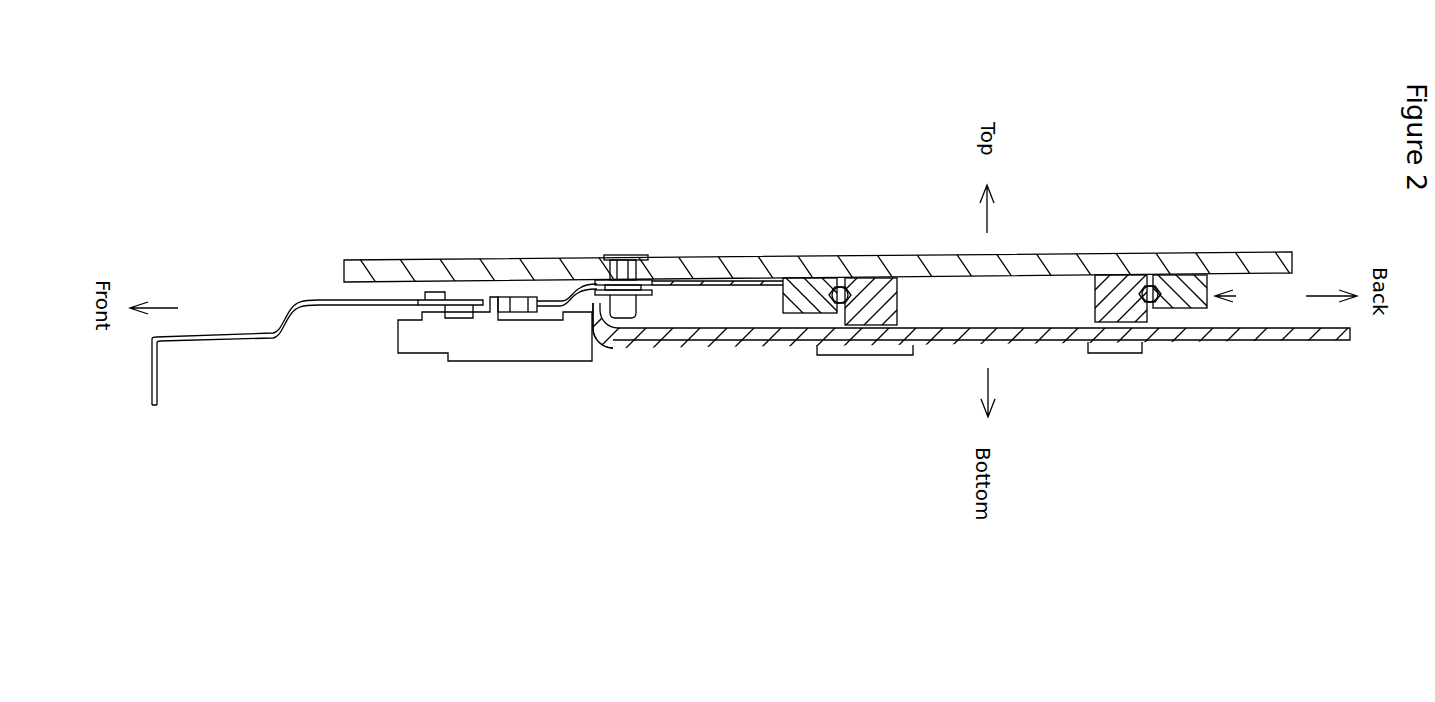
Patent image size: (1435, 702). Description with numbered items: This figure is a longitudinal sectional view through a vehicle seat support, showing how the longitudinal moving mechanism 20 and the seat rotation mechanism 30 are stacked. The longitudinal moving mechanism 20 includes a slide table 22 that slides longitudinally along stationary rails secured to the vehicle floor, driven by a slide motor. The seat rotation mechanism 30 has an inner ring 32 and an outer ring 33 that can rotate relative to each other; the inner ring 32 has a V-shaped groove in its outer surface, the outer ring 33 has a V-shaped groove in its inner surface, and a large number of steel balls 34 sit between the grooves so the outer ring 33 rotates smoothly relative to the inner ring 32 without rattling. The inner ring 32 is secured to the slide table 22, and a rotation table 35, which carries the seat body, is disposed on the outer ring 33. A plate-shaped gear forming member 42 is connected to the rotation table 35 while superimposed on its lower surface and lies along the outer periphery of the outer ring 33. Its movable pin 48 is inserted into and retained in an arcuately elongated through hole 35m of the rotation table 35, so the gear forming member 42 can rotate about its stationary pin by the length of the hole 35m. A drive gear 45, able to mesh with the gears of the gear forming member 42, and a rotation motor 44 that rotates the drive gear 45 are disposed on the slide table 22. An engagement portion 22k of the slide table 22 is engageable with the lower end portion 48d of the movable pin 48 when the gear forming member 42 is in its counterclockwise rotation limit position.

The longitudinal moving mechanism 20 is at (741, 364).
The slide table 22 is at (800, 334).
The engagement portion 22k is at (600, 345).
The seat rotation mechanism 30 is at (850, 295).
The inner ring 32 is at (897, 302).
The outer ring 33 is at (803, 290).
The steel balls 34 is at (836, 289).
The rotation table 35 is at (1099, 242).
The arcuately elongated through hole 35m is at (614, 255).
The gear forming member 42 is at (704, 304).
The rotation motor 44 is at (500, 337).
The drive gear 45 is at (518, 297).
The movable pin 48 is at (633, 255).
The lower end portion 48d is at (625, 312).